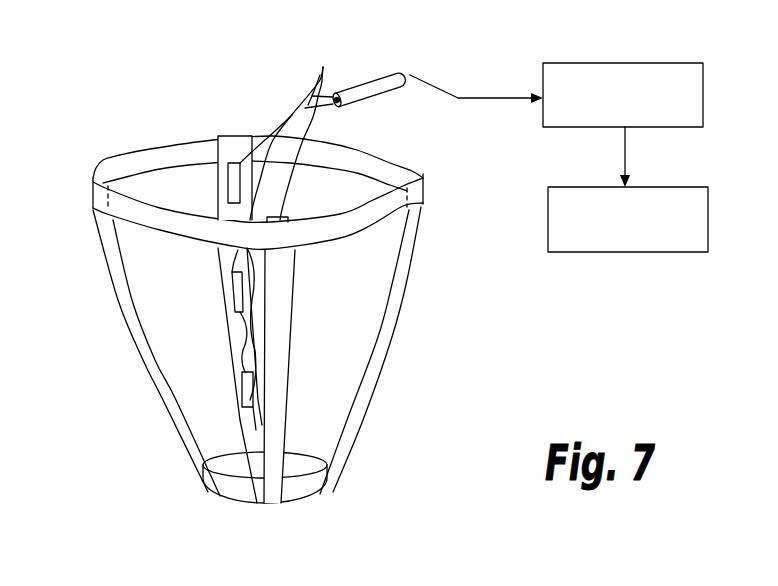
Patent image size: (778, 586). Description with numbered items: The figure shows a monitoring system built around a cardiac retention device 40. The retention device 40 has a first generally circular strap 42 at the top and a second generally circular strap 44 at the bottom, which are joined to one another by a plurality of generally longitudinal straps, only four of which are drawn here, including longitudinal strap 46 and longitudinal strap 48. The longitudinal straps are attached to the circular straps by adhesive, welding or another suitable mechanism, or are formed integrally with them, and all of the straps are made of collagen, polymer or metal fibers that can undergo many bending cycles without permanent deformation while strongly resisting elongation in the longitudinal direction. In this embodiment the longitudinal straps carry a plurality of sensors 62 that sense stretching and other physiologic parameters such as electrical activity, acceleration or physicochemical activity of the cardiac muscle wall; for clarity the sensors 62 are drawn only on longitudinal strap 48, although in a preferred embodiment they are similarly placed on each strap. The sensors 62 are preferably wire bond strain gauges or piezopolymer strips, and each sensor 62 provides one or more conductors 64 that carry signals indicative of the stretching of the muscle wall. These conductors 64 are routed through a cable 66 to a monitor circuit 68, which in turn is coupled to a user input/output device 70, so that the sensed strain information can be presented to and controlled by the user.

The retention device 40 is at (76, 184).
The first generally circular strap 42 is at (147, 150).
The second generally circular strap 44 is at (247, 493).
The longitudinal strap 46 is at (393, 337).
The longitudinal strap 48 is at (227, 135).
The sensors 62 is at (227, 180).
The conductors 64 is at (288, 126).
The cable 66 is at (373, 80).
The monitor circuit 68 is at (620, 63).
The user input/output (I/O) device 70 is at (675, 186).